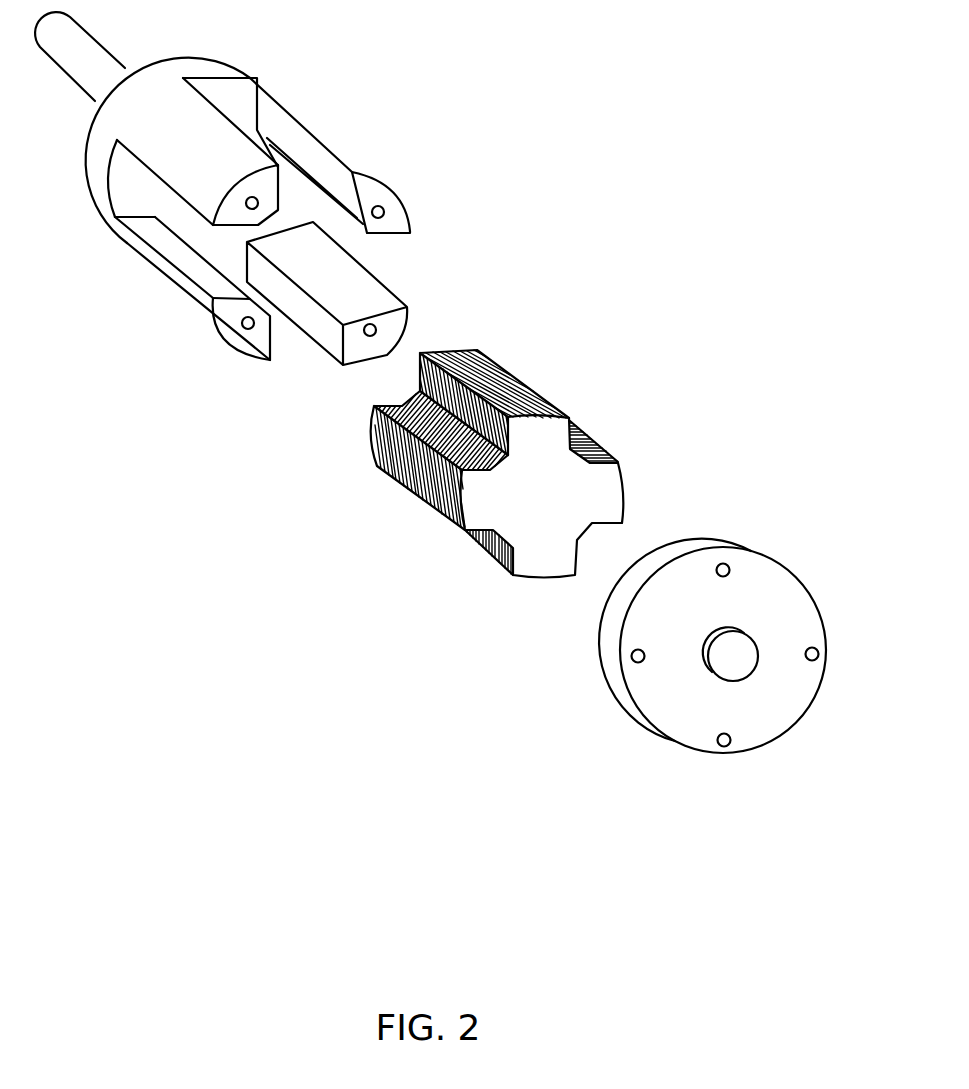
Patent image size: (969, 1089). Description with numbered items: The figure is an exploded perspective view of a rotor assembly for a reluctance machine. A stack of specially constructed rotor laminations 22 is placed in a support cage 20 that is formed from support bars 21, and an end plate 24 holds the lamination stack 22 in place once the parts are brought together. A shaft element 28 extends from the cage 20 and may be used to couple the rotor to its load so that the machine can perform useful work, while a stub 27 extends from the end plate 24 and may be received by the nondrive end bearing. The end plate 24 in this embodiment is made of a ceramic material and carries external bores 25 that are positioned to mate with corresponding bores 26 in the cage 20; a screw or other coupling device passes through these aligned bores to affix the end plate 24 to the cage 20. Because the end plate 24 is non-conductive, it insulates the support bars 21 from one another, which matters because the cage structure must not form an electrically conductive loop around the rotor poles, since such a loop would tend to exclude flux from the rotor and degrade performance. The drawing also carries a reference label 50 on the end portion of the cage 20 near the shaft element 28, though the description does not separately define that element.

The support cage 20 is at (241, 224).
The support bars 21 is at (269, 365).
The rotor laminations 22 is at (399, 504).
The end plate 24 is at (724, 680).
The external bores 25 is at (720, 563).
The bores 26 is at (348, 158).
The stub 27 is at (708, 674).
The shaft element 28 is at (89, 34).
The end flange 50 is at (75, 188).